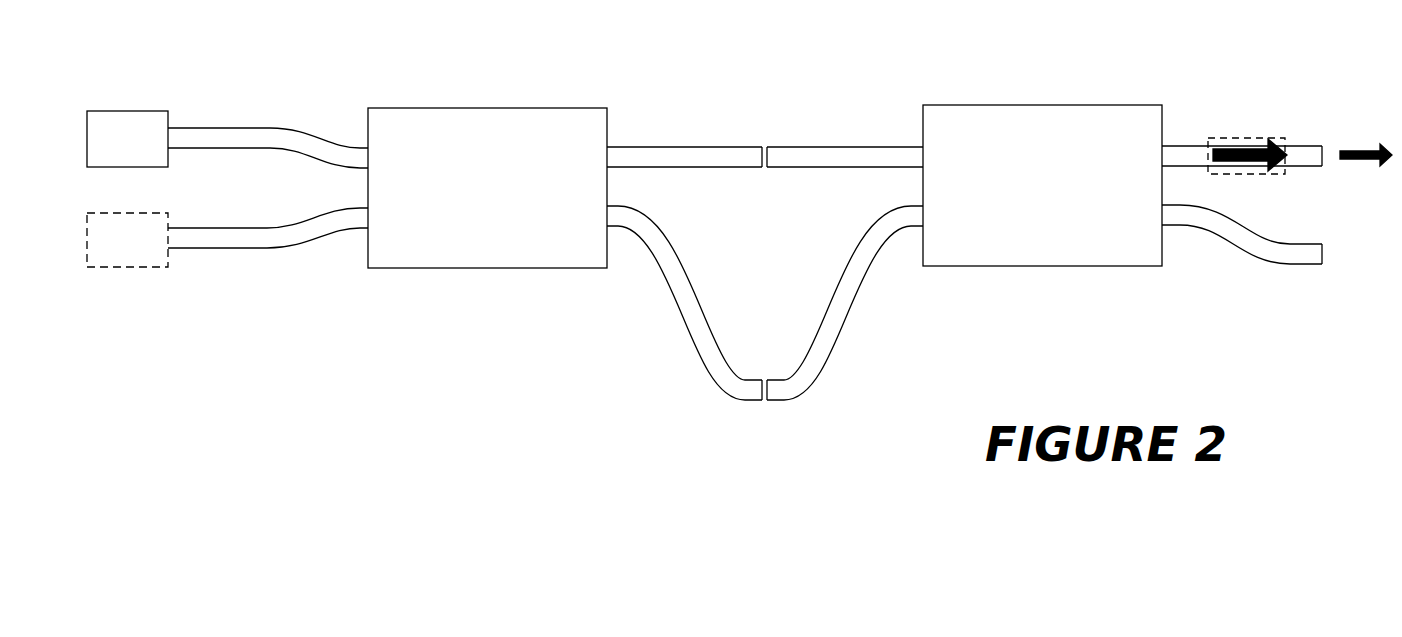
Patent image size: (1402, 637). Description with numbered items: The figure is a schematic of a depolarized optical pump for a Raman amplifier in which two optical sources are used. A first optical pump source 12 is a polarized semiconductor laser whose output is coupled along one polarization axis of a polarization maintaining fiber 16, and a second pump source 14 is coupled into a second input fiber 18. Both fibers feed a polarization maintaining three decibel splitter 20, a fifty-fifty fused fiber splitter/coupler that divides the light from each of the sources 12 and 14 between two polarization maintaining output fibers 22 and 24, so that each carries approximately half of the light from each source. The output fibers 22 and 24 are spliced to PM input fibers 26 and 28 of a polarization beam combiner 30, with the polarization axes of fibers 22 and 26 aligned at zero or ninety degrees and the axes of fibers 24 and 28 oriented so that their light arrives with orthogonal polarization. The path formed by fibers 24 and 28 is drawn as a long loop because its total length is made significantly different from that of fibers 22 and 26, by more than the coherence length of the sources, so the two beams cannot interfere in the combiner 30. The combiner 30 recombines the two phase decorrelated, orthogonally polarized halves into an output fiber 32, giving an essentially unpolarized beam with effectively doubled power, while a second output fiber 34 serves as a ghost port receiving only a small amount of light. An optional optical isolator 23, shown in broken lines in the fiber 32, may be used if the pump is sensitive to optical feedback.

The optical pump source 12 is at (150, 122).
The second pump source 14 is at (135, 257).
The polarization maintaining fiber 16 is at (252, 135).
The second input fiber 18 is at (247, 240).
The polarization maintaining 3 dB splitter 20 is at (524, 115).
The output fiber 22 is at (683, 155).
The optical isolator 23 is at (1258, 142).
The output fiber 24 is at (713, 368).
The PM input fiber 26 is at (802, 155).
The PM input fiber 28 is at (807, 373).
The polarization beam combiner 30 is at (999, 112).
The output fiber 32 is at (1177, 147).
The output fiber 34 is at (1280, 250).